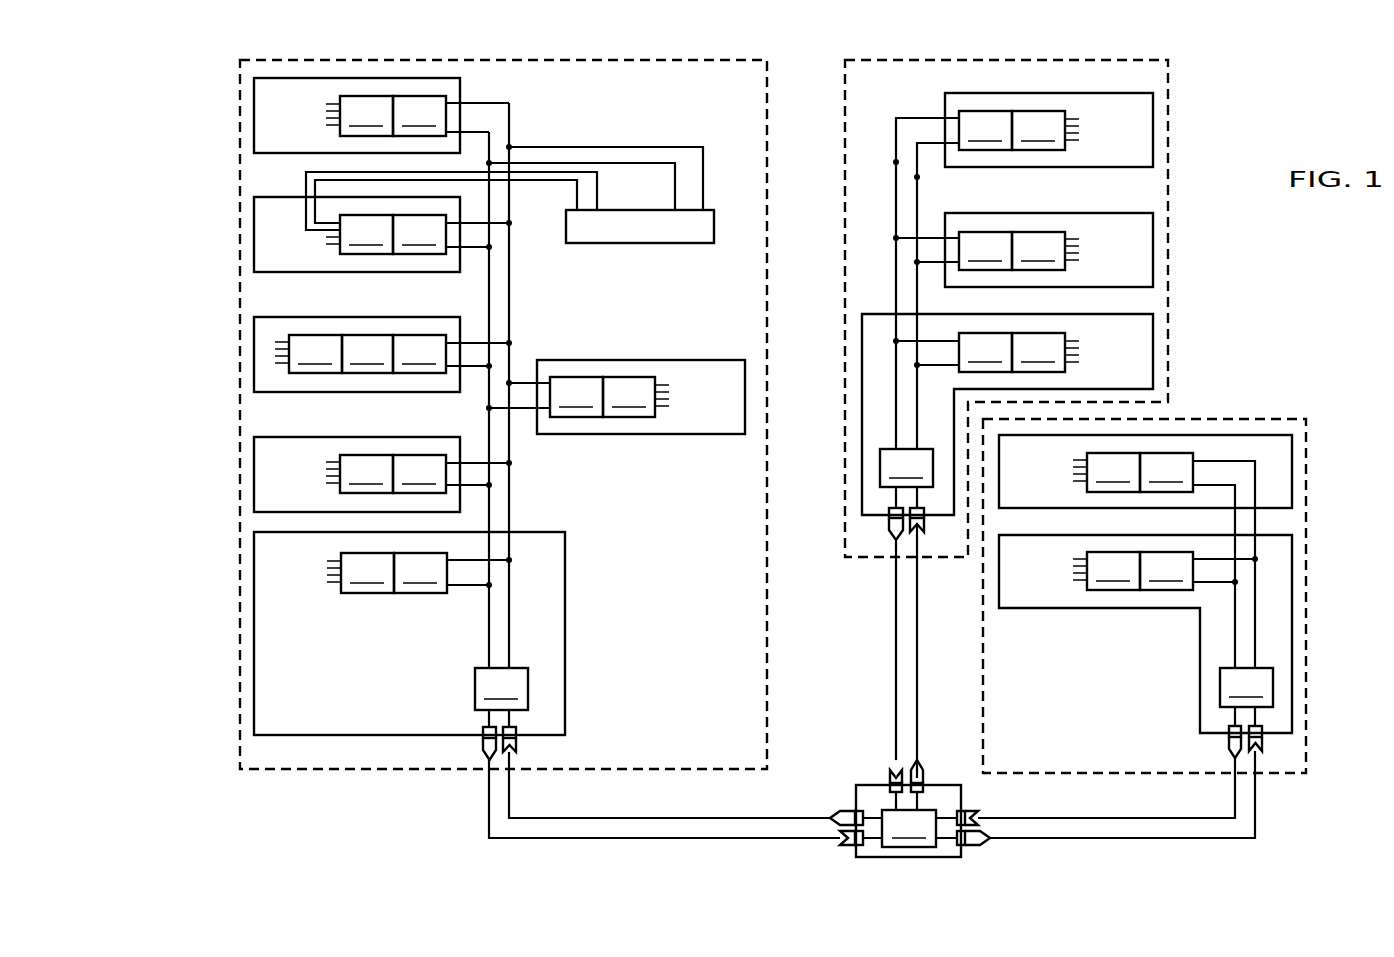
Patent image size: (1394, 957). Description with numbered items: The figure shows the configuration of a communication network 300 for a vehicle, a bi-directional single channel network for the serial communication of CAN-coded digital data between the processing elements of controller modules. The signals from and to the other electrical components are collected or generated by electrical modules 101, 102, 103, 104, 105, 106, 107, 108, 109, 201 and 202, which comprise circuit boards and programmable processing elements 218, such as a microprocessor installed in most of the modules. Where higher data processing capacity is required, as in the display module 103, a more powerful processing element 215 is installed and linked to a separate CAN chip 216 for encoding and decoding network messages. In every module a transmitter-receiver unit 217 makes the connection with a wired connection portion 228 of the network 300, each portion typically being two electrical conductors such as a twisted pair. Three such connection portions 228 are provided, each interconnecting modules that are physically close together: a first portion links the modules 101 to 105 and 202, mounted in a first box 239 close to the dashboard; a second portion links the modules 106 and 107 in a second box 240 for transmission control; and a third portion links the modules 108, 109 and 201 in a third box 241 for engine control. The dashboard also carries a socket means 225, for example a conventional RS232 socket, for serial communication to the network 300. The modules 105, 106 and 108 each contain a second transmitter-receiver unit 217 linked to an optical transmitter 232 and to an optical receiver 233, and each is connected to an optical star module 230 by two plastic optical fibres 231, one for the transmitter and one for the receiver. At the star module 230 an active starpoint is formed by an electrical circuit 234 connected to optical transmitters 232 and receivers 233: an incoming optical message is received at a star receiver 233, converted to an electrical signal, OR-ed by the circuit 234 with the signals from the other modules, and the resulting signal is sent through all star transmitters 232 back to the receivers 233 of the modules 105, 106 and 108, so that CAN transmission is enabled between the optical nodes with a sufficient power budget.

The electrical module 101 is at (254, 118).
The electrical module 102 is at (254, 238).
The display module 103 is at (254, 356).
The electrical module 104 is at (254, 476).
The electrical module 105 is at (254, 636).
The electrical module 106 is at (999, 576).
The electrical module 107 is at (1292, 472).
The electrical module 108 is at (1153, 355).
The electrical module 109 is at (1153, 250).
The electrical module 201 is at (1153, 131).
The electrical module 202 is at (640, 434).
The processing element 215 is at (308, 354).
The CAN chip 216 is at (367, 354).
The transmitter-receiver unit 217 is at (833, 403).
The processing element 218 is at (733, 344).
The socket means 225 is at (638, 245).
The connection portion 228 is at (489, 311).
The optical star module 230 is at (961, 785).
The optical fibre 231 is at (649, 838).
The optical transmitter 232 is at (483, 745).
The optical receiver 233 is at (520, 745).
The electrical circuit 234 is at (909, 828).
The first box 239 is at (275, 772).
The second box 240 is at (1232, 419).
The third box 241 is at (1168, 298).
The communication network 300 is at (380, 822).